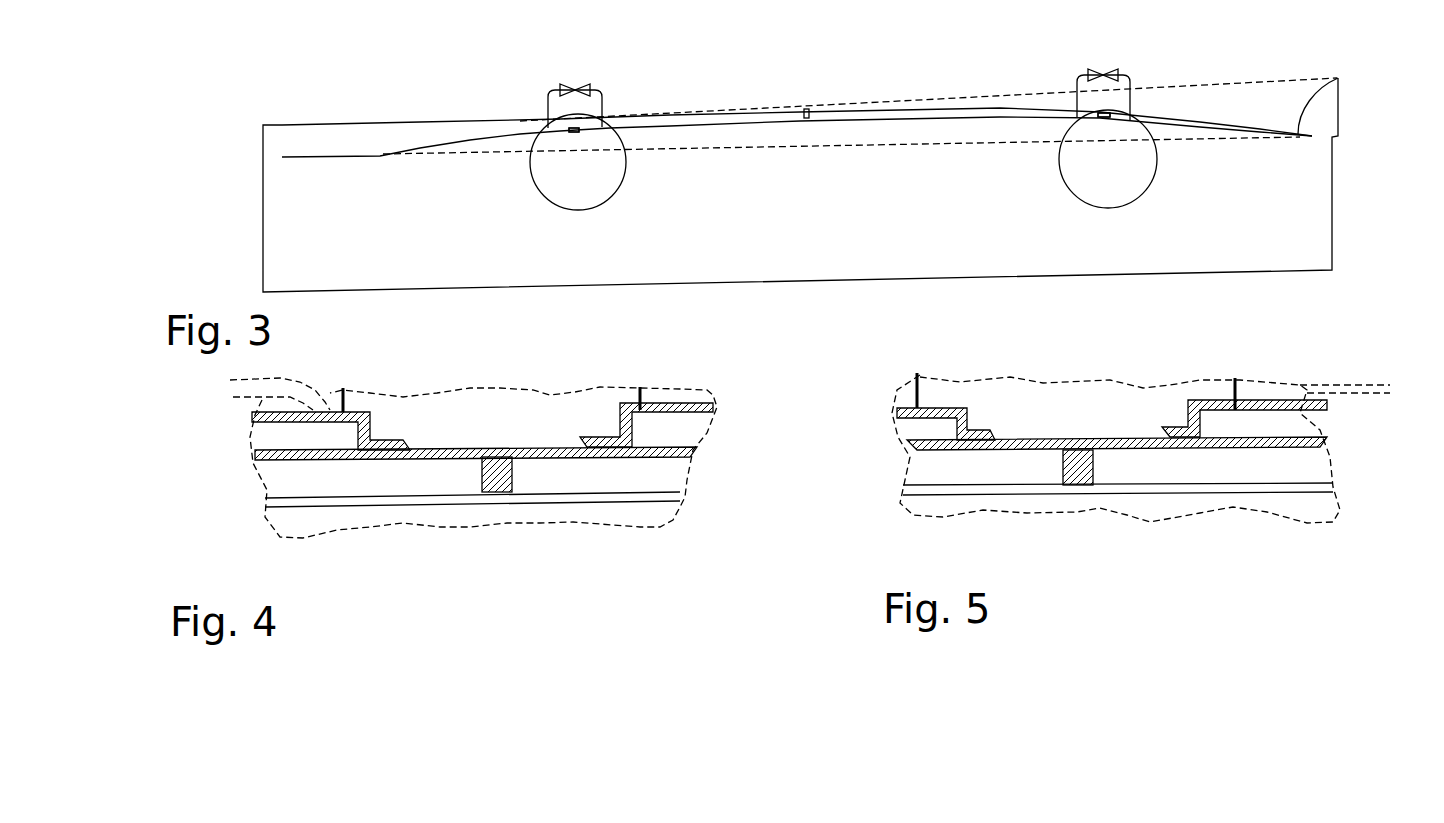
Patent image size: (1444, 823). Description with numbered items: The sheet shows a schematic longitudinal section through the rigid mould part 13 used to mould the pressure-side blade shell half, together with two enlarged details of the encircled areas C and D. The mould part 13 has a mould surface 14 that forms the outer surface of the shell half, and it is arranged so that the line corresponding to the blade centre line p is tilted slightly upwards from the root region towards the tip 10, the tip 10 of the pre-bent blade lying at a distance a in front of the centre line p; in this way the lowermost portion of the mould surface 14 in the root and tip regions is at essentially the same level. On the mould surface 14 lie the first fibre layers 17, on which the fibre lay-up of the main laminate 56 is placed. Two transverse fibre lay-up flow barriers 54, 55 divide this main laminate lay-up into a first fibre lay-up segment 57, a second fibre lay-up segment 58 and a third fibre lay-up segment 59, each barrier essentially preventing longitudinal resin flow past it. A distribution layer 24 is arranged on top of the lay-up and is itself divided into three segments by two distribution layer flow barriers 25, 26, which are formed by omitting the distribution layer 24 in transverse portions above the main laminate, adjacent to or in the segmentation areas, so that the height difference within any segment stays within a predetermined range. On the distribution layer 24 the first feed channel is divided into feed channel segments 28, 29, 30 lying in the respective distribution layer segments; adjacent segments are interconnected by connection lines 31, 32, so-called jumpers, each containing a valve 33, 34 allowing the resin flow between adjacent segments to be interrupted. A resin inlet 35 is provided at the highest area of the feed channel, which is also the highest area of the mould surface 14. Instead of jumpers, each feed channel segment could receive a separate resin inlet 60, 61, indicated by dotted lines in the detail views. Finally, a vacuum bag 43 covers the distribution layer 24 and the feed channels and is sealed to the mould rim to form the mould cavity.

In FIG. 3, the tip 10 is at (1338, 78).
In FIG. 3, the mould part 13 is at (857, 236).
In FIG. 4, the mould part 13 is at (630, 524).
In FIG. 5, the mould part 13 is at (1292, 514).
In FIG. 3, the mould surface 14 is at (470, 138).
In FIG. 4, the mould surface 14 is at (490, 542).
In FIG. 5, the mould surface 14 is at (1118, 528).
In FIG. 4, the first fibre layers 17 is at (490, 542).
In FIG. 5, the first fibre layers 17 is at (1118, 528).
In FIG. 4, the distribution layer 24 is at (450, 532).
In FIG. 5, the distribution layer 24 is at (1078, 524).
In FIG. 3, the distribution layer flow barrier 25 is at (575, 134).
In FIG. 4, the distribution layer flow barrier 25 is at (447, 448).
In FIG. 3, the distribution layer flow barrier 26 is at (1107, 118).
In FIG. 5, the distribution layer flow barrier 26 is at (1037, 437).
In FIG. 4, the feed channel segment 28 is at (441, 410).
In FIG. 4, the feed channel segment 29 is at (670, 444).
In FIG. 5, the feed channel segment 29 is at (907, 428).
In FIG. 5, the feed channel segment 30 is at (1286, 426).
In FIG. 3, the connection line 31 is at (562, 90).
In FIG. 4, the connection line 31 is at (641, 403).
In FIG. 3, the connection line 32 is at (1088, 75).
In FIG. 5, the connection line 32 is at (1238, 392).
In FIG. 3, the valve 33 is at (578, 90).
In FIG. 3, the valve 34 is at (1107, 75).
In FIG. 3, the resin inlet 35 is at (806, 109).
In FIG. 4, the vacuum bag 43 is at (670, 428).
In FIG. 5, the vacuum bag 43 is at (1267, 428).
In FIG. 3, the fibre lay-up flow barrier 54 is at (592, 165).
In FIG. 4, the fibre lay-up flow barrier 54 is at (498, 483).
In FIG. 3, the fibre lay-up flow barrier 55 is at (1119, 152).
In FIG. 5, the fibre lay-up flow barrier 55 is at (1077, 473).
In FIG. 4, the fibre lay-up of main laminate 56 is at (490, 539).
In FIG. 5, the fibre lay-up of main laminate 56 is at (1118, 527).
In FIG. 4, the first fibre lay-up segment 57 is at (490, 539).
In FIG. 4, the second fibre lay-up segment 58 is at (490, 545).
In FIG. 5, the second fibre lay-up segment 58 is at (1078, 527).
In FIG. 5, the third fibre lay-up segment 59 is at (1118, 528).
In FIG. 4, the resin inlet 60 is at (316, 418).
In FIG. 5, the resin inlet 61 is at (1285, 435).
In FIG. 3, the centre line p is at (1283, 78).
In FIG. 3, the distance a is at (1340, 103).
In FIG. 3, the encircled area C is at (583, 166).
In FIG. 3, the encircled area D is at (1116, 159).